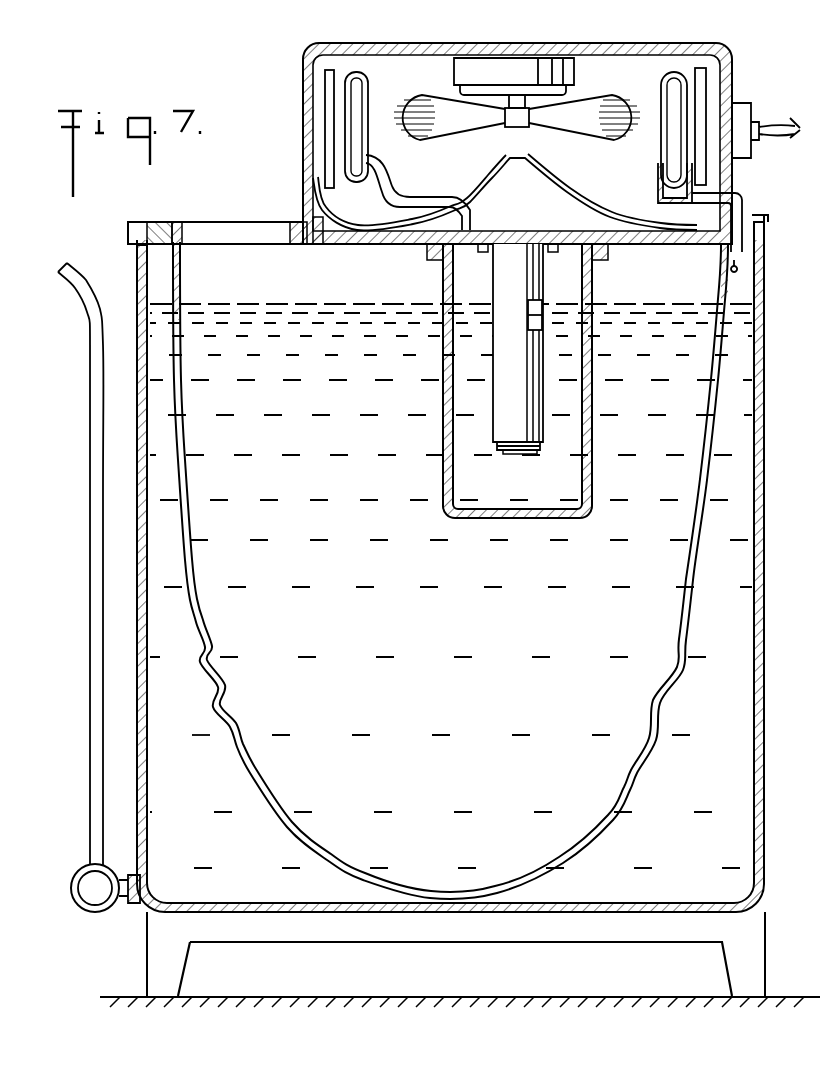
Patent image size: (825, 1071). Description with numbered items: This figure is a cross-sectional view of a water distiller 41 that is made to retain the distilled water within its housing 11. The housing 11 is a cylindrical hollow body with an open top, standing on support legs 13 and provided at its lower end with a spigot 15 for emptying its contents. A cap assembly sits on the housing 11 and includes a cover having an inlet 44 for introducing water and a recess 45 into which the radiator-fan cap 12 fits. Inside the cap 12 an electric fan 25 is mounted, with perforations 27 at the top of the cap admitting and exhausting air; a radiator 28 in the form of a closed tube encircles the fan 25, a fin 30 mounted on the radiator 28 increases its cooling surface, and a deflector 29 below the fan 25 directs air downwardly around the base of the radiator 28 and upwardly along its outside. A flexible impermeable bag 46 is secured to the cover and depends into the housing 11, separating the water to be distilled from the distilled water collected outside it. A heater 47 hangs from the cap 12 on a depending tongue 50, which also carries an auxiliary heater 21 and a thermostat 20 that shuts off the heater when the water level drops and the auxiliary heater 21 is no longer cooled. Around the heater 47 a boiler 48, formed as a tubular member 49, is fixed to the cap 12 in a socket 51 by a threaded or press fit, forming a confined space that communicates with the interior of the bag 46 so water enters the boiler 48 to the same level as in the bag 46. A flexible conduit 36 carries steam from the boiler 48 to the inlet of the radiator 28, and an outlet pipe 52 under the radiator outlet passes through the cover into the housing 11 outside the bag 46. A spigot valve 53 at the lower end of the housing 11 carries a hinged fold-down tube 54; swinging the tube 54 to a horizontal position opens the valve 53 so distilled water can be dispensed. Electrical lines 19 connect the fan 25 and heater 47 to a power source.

The housing 11 is at (757, 576).
The radiator-fan cap 12 is at (292, 126).
The support legs 13 is at (147, 964).
The spigot 15 is at (128, 996).
The electrical lines 19 is at (775, 122).
The thermostat 20 is at (540, 300).
The auxiliary heater 21 is at (541, 331).
The electric fan 25 is at (577, 70).
The perforations 27 is at (414, 46).
The radiator 28 is at (660, 142).
The deflector 29 is at (566, 196).
The fin 30 is at (324, 76).
The flexible conduit 36 is at (424, 196).
The water distiller 41 is at (784, 450).
The inlet 44 is at (180, 232).
The recess 45 is at (328, 244).
The bag 46 is at (178, 276).
The heater 47 is at (510, 452).
The boiler 48 is at (592, 280).
The tubular member 49 is at (520, 518).
The depending tongue 50 is at (510, 383).
The socket 51 is at (436, 260).
The outlet pipe 52 is at (744, 196).
The spigot valve 53 is at (72, 880).
The fold-down tube 54 is at (89, 548).